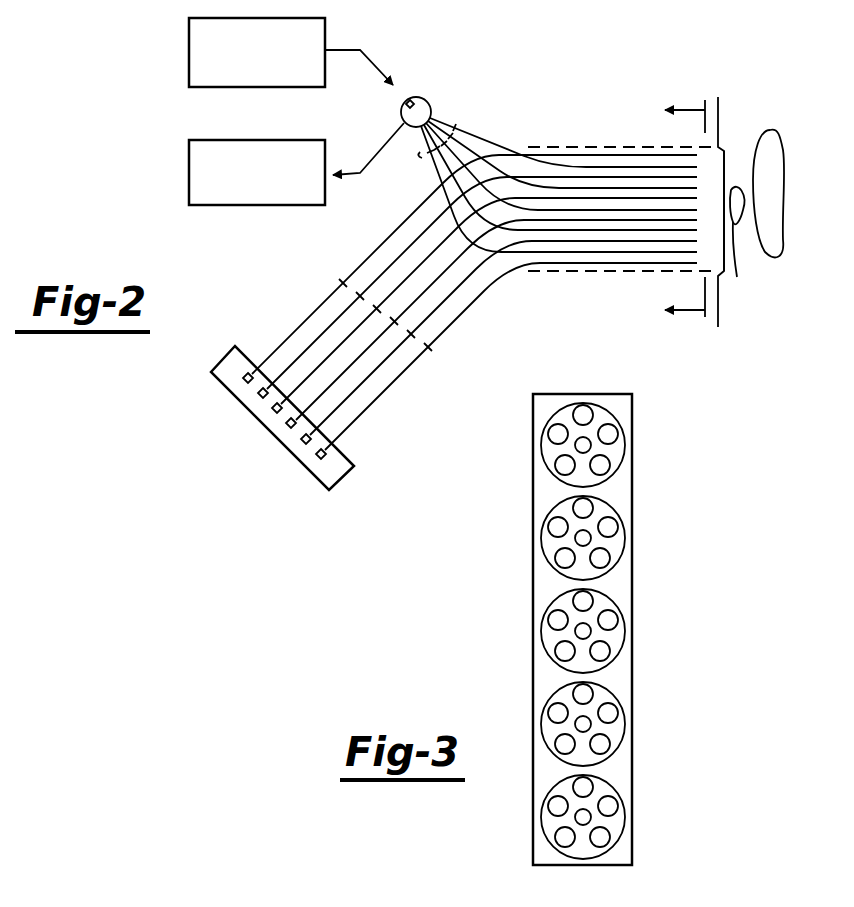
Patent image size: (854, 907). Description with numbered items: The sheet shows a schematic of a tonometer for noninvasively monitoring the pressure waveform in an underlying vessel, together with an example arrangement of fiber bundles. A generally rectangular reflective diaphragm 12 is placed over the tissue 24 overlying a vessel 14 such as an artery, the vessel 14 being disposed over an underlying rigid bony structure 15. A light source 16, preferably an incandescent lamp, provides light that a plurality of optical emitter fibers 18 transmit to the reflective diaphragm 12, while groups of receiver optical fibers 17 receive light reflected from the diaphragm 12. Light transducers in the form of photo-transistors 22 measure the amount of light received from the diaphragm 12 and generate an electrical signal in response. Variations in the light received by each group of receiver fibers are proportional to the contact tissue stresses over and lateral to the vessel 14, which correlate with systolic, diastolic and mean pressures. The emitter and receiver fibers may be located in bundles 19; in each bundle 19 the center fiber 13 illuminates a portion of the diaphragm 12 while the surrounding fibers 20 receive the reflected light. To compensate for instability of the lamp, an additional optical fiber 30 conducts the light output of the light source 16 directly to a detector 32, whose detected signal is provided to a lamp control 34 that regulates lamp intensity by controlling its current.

In FIG. 2, the diaphragm 12 is at (726, 150).
In FIG. 2, the emitter fiber 13 is at (468, 150).
In FIG. 3, the emitter fiber 13 is at (578, 445).
In FIG. 2, the vessel 14 is at (748, 242).
In FIG. 2, the rigid bony structure 15 is at (772, 254).
In FIG. 2, the light source 16 is at (421, 97).
In FIG. 2, the receiver optical fibers 17 is at (345, 262).
In FIG. 2, the optical emitter fibers 18 is at (457, 120).
In FIG. 2, the bundle of optical fibers 19 is at (322, 323).
In FIG. 3, the bundle of optical fibers 19 is at (616, 412).
In FIG. 3, the surrounding fibers 20 is at (556, 428).
In FIG. 2, the photo-transistors 22 is at (250, 372).
In FIG. 2, the tissue 24 is at (718, 96).
In FIG. 2, the additional optical fiber 30 is at (393, 140).
In FIG. 2, the detector 32 is at (236, 206).
In FIG. 2, the lamp control 34 is at (240, 88).